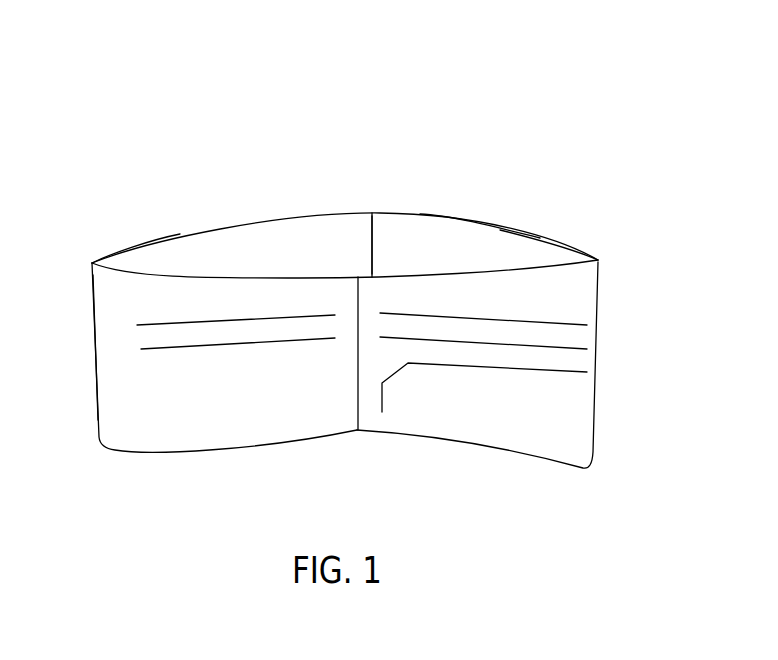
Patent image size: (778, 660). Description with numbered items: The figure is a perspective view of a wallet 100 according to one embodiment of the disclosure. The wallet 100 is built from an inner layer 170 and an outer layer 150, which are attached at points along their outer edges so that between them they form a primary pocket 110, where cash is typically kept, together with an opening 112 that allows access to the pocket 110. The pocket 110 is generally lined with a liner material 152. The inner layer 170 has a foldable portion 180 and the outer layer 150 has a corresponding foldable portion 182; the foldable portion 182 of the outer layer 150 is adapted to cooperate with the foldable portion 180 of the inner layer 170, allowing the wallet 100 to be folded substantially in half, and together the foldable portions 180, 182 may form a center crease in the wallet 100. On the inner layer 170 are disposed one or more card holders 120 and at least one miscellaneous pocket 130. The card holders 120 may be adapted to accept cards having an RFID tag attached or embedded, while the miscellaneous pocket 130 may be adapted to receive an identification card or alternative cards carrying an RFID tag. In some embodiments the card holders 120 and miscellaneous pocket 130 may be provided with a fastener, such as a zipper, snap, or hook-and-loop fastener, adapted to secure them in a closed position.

The wallet 100 is at (108, 70).
The primary pocket 110 is at (317, 258).
The opening 112 is at (105, 243).
The card holders 120 is at (139, 319).
The miscellaneous pocket 130 is at (547, 373).
The outer layer 150 is at (472, 222).
The liner material 152 is at (528, 258).
The inner layer 170 is at (127, 293).
The foldable portion 180 is at (358, 397).
The foldable portion 182 is at (373, 228).